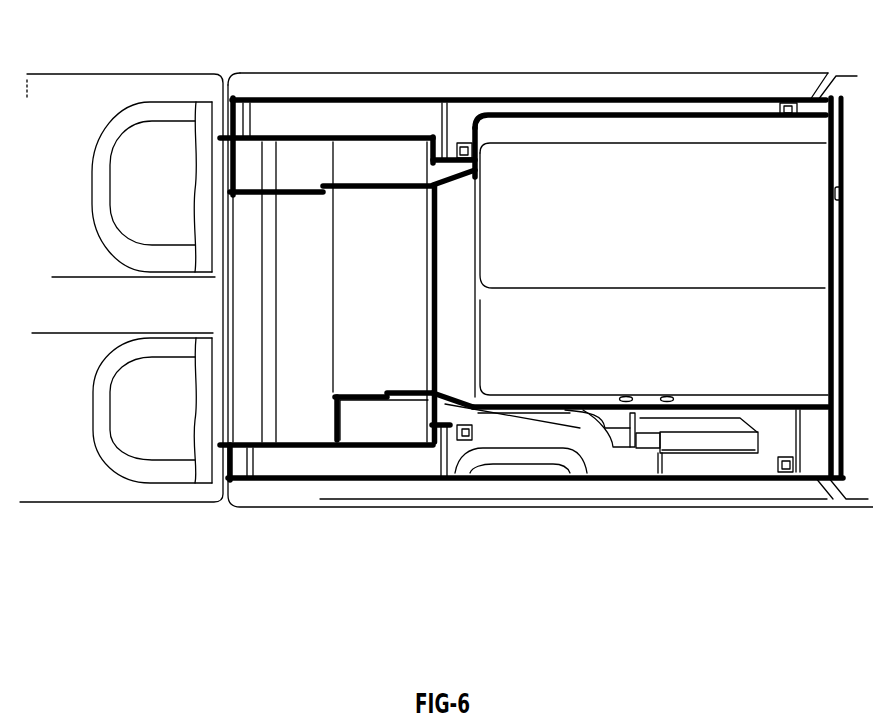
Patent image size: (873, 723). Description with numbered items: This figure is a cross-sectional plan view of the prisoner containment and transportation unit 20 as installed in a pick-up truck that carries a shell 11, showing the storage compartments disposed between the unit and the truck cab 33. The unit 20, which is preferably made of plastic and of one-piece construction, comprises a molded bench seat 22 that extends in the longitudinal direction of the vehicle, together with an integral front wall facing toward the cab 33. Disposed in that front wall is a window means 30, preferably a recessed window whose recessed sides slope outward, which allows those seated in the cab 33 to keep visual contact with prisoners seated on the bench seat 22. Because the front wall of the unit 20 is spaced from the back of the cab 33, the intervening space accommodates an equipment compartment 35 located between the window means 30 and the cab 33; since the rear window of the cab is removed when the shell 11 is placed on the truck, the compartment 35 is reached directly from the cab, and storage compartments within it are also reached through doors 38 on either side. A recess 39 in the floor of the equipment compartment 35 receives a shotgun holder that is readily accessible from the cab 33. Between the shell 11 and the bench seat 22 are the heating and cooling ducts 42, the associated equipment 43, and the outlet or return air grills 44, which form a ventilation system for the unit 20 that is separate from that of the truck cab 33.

The shell 11 is at (687, 100).
The prisoner containment and transportation unit 20 is at (549, 112).
The bench seat 22 is at (720, 327).
The window means 30 is at (466, 242).
The truck cab 33 is at (157, 316).
The equipment compartment 35 is at (392, 298).
The doors 38 is at (287, 195).
The recess 39 is at (302, 421).
The ducts 42 is at (588, 428).
The equipment 43 is at (757, 452).
The air grills 44 is at (665, 395).